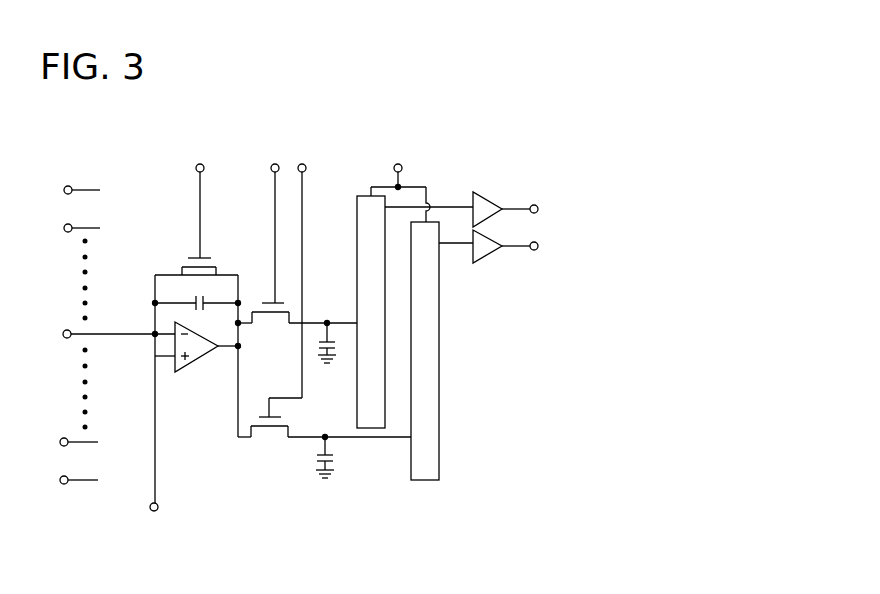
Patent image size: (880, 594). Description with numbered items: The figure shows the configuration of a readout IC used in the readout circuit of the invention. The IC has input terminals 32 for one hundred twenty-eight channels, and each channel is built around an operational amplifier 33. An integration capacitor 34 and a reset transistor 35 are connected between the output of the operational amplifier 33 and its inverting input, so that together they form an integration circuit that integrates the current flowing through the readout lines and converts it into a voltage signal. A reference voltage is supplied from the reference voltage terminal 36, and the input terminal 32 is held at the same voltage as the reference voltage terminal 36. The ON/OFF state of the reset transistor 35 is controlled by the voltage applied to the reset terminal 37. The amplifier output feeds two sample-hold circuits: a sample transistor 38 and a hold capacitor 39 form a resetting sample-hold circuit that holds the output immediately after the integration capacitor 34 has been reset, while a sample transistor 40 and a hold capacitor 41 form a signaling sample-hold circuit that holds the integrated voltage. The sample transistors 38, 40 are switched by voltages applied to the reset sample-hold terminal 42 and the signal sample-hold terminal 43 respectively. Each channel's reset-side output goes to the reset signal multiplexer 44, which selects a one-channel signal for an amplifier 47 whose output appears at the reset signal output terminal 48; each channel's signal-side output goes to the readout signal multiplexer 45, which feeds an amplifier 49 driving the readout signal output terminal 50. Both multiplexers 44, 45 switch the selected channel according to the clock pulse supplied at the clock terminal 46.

The input terminals 32 is at (70, 185).
The operational amplifier 33 is at (198, 366).
The integration capacitor 34 is at (194, 303).
The reset transistor 35 is at (183, 257).
The Vref terminal 36 is at (159, 502).
The Reset terminal 37 is at (195, 167).
The sample transistor 38 is at (262, 300).
The hold capacitor 39 is at (325, 322).
The sample transistor 40 is at (268, 440).
The hold capacitor 41 is at (316, 472).
The SHR terminal 42 is at (270, 168).
The SHS terminal 43 is at (307, 170).
The reset signal multiplexer 44 is at (367, 428).
The readout signal multiplexer 45 is at (417, 480).
The CLK1 terminal 46 is at (404, 168).
The amplifier 47 is at (489, 191).
The reset signal output terminal 48 is at (536, 204).
The amplifier 49 is at (486, 262).
The readout signal output terminal 50 is at (533, 251).